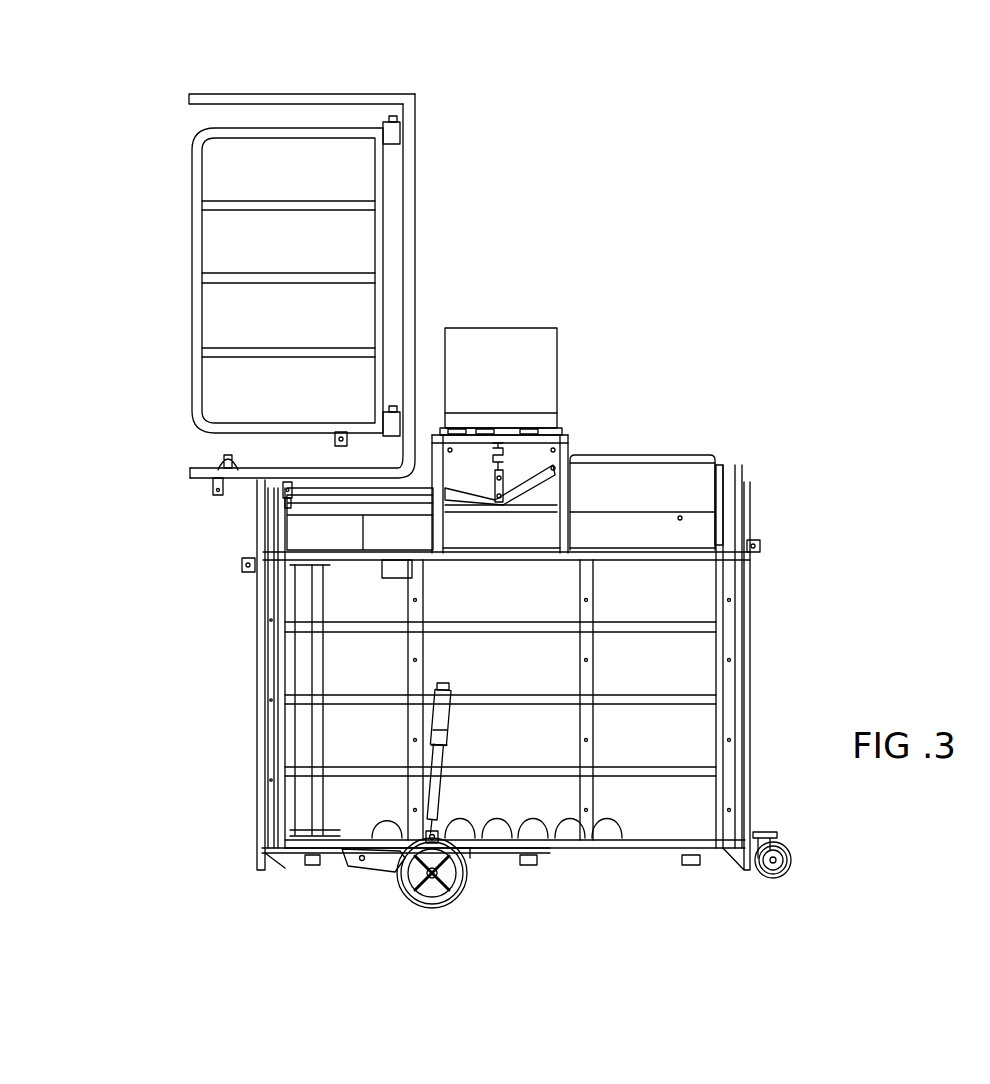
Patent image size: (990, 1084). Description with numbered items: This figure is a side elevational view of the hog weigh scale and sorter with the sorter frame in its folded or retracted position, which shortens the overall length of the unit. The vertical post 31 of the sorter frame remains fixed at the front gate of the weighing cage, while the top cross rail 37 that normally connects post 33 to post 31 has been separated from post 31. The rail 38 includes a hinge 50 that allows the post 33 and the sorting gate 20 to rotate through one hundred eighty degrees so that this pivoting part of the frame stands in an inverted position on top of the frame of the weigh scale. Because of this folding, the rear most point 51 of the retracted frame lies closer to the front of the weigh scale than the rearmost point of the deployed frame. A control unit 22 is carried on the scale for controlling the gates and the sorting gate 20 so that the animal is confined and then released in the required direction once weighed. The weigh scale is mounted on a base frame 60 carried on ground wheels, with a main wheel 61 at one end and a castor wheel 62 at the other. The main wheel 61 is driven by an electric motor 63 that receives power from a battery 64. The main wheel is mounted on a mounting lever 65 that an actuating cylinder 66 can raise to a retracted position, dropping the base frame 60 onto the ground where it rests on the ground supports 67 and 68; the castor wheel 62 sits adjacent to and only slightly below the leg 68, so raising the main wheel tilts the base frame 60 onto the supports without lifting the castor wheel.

The sorting gate 20 is at (387, 223).
The control unit 22 is at (572, 403).
The vertical post 31 is at (260, 733).
The vertical post 33 is at (415, 247).
The top cross rail 37 is at (303, 90).
The bottom cross rail 38 is at (287, 480).
The hinge 50 is at (225, 457).
The rear most point 51 is at (192, 482).
The base frame 60 is at (612, 850).
The main wheel 61 is at (467, 887).
The castor wheel 62 is at (787, 875).
The electric motor 63 is at (410, 880).
The battery 64 is at (647, 490).
The mounting lever 65 is at (375, 863).
The actuating cylinder 66 is at (447, 730).
The ground support 67 is at (280, 860).
The ground support 68 is at (745, 873).